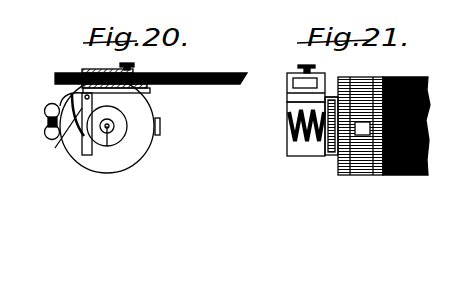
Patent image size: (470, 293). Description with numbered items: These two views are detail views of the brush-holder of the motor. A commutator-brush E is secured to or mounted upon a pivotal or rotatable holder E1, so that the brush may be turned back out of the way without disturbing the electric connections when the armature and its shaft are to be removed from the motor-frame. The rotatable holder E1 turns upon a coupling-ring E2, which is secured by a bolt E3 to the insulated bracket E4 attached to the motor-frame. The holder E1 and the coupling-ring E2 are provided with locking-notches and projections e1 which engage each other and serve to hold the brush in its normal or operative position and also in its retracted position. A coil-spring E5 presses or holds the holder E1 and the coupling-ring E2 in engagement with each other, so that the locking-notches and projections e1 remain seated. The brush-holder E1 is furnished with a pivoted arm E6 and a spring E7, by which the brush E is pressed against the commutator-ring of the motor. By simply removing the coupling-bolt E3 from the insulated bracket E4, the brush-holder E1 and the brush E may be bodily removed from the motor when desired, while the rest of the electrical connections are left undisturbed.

In FIG. 20, the commutator-brush E is at (233, 20).
In FIG. 21, the commutator-brush E is at (297, 82).
In FIG. 20, the pivotal or rotatable holder E1 is at (123, 138).
In FIG. 21, the pivotal or rotatable holder E1 is at (325, 153).
In FIG. 21, the coupling-ring E2 is at (403, 53).
In FIG. 20, the bolt E3 is at (213, 116).
In FIG. 21, the bolt E3 is at (362, 135).
In FIG. 21, the insulated bracket E4 is at (378, 175).
In FIG. 21, the coil-spring E5 is at (267, 172).
In FIG. 20, the pivoted arm E6 is at (167, 59).
In FIG. 21, the pivoted arm E6 is at (288, 66).
In FIG. 20, the spring E7 is at (55, 149).
In FIG. 21, the locking-notches and projections e1 is at (320, 142).